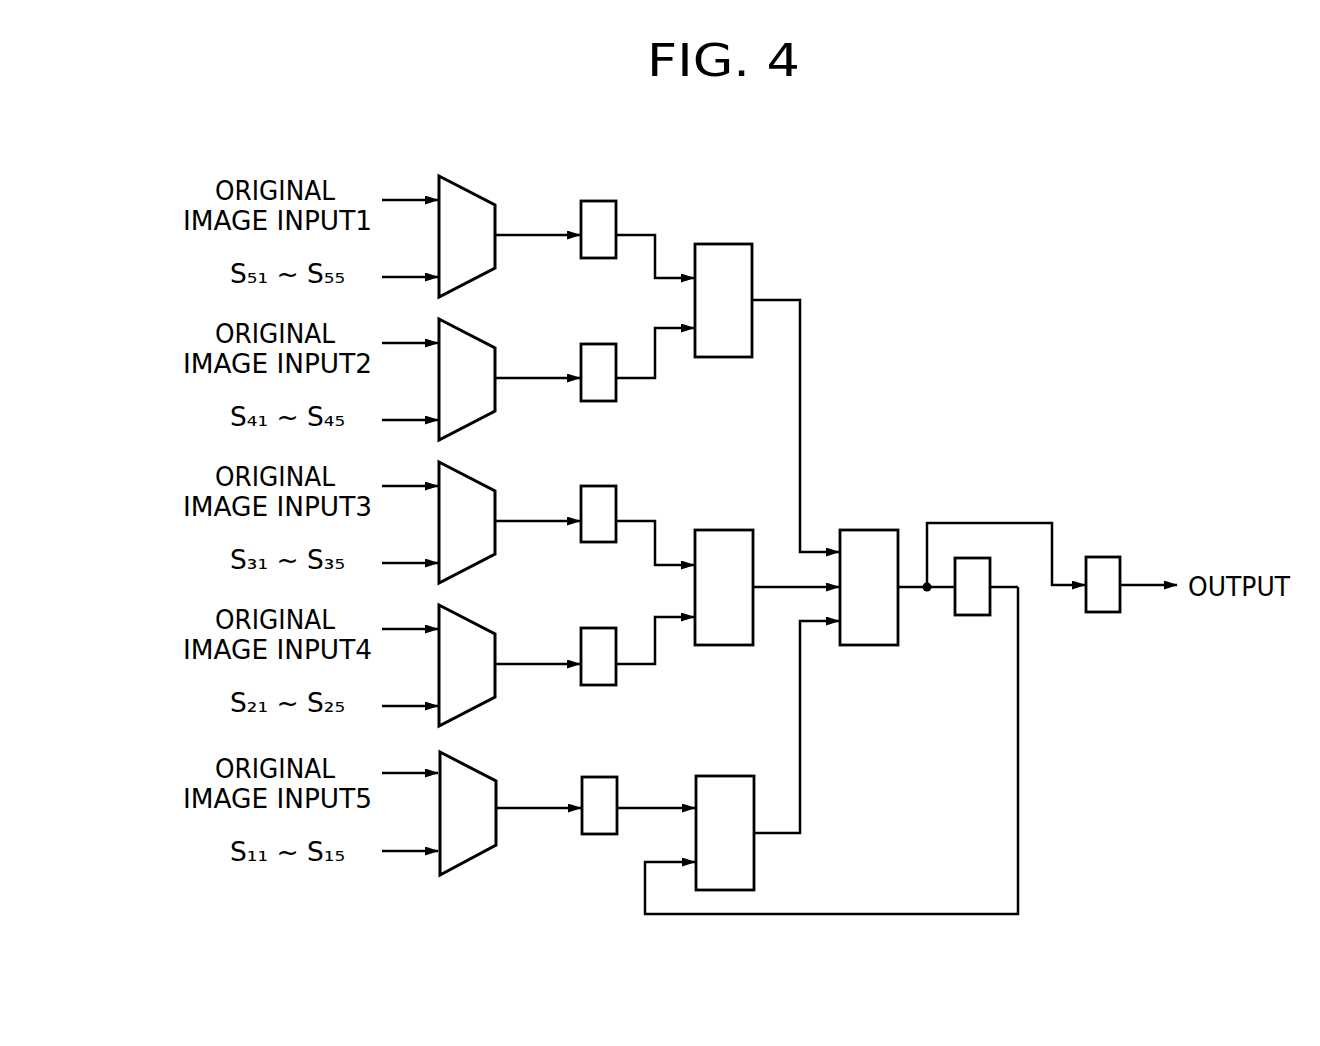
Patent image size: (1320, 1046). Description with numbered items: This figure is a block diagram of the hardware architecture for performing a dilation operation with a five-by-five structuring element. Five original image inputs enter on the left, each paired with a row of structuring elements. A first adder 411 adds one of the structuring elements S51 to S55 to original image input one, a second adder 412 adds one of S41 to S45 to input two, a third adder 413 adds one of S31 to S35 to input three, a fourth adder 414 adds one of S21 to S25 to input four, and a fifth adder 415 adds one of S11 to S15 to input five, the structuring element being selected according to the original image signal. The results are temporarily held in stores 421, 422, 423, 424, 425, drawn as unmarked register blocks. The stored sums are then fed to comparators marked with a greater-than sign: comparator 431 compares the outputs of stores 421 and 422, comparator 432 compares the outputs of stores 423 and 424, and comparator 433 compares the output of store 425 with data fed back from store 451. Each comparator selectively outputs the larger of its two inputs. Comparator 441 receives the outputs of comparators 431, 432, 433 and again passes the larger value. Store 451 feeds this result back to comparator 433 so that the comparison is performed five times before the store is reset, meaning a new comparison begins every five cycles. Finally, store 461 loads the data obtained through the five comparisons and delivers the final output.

The first adder 411 is at (475, 190).
The second adder 412 is at (475, 333).
The third adder 413 is at (475, 476).
The fourth adder 414 is at (475, 620).
The fifth adder 415 is at (475, 765).
The store 421 is at (598, 201).
The store 422 is at (598, 344).
The store 423 is at (598, 486).
The store 424 is at (598, 628).
The store 425 is at (600, 777).
The comparator 431 is at (722, 244).
The comparator 432 is at (722, 530).
The comparator 433 is at (722, 776).
The comparator 441 is at (870, 647).
The store 451 is at (972, 617).
The store 461 is at (1103, 614).